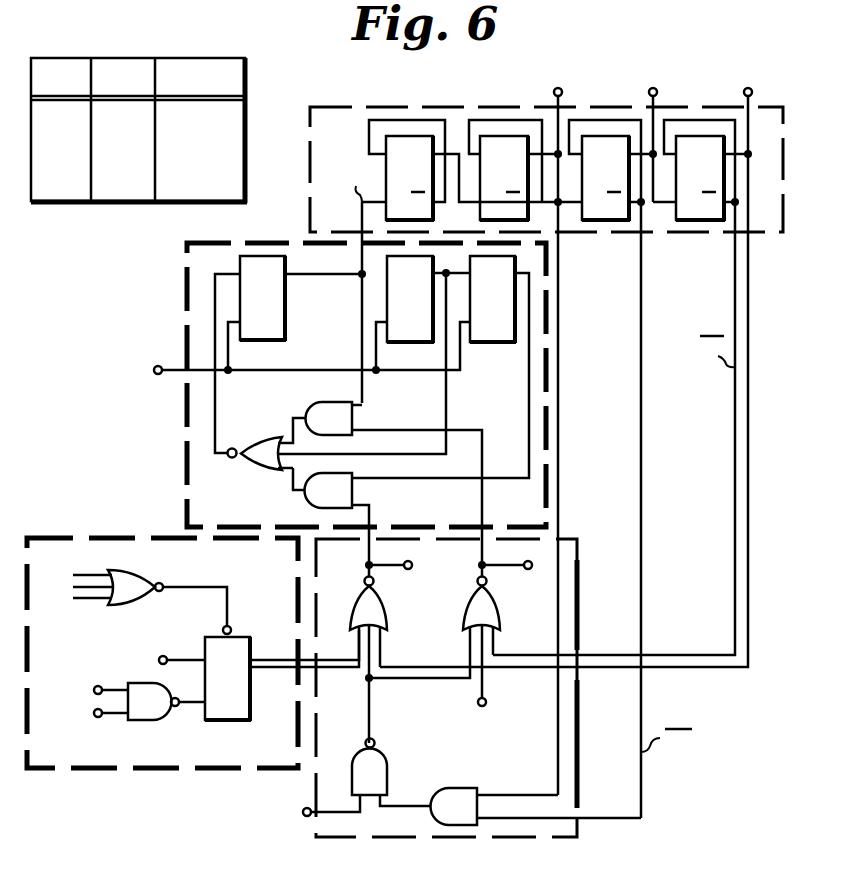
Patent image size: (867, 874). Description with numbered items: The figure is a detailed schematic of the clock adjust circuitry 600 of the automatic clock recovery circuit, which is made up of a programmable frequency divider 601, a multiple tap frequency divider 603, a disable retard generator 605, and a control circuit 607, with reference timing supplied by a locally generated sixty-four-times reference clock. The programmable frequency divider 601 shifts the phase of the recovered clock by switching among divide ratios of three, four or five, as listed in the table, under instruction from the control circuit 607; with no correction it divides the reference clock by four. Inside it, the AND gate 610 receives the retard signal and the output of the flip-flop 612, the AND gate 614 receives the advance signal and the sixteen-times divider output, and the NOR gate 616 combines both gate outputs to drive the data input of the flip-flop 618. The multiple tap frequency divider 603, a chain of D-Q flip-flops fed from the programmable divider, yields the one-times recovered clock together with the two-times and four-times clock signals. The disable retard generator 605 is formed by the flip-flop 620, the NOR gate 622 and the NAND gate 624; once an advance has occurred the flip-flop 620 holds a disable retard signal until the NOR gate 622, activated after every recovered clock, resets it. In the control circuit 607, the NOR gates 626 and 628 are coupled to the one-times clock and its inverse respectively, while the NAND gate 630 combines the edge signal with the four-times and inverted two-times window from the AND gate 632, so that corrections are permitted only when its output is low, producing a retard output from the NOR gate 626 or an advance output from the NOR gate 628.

The clock adjust circuitry 600 is at (318, 85).
The programmable frequency divider 601 is at (218, 245).
The multiple tap frequency divider 603 is at (398, 108).
The disable retard generator 605 is at (46, 538).
The control circuit 607 is at (577, 562).
The AND gate 610 is at (306, 502).
The flip-flop 612 is at (490, 343).
The AND gate 614 is at (307, 402).
The NOR gate 616 is at (263, 437).
The flip-flop 618 is at (287, 315).
The flip-flop 620 is at (232, 722).
The NOR gate 622 is at (125, 606).
The NAND gate 624 is at (147, 722).
The NOR gate 626 is at (388, 614).
The NOR gate 628 is at (501, 614).
The NAND gate 630 is at (390, 770).
The AND gate 632 is at (470, 786).